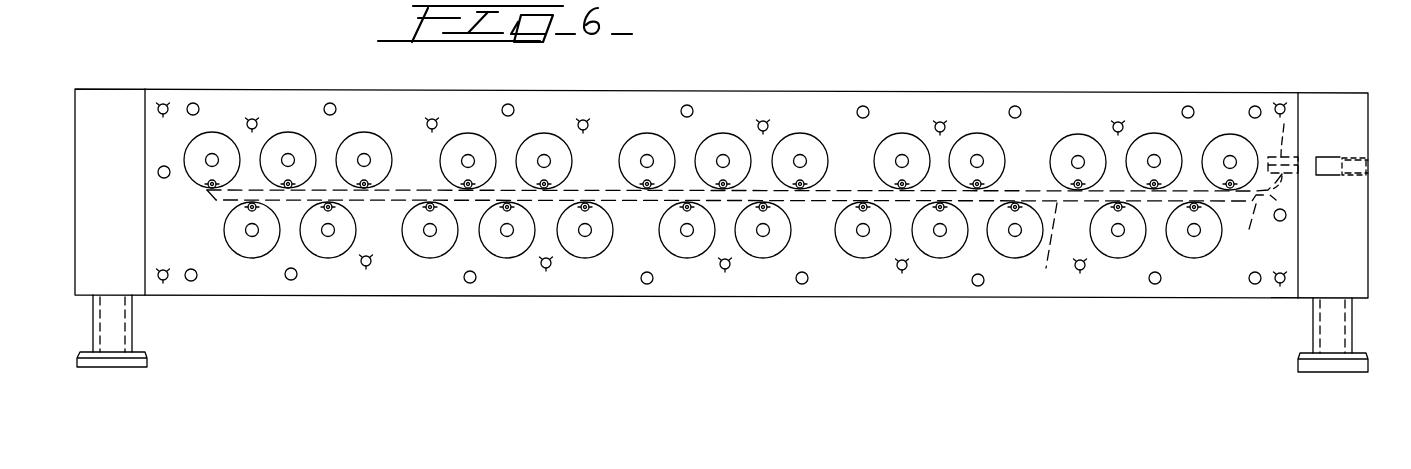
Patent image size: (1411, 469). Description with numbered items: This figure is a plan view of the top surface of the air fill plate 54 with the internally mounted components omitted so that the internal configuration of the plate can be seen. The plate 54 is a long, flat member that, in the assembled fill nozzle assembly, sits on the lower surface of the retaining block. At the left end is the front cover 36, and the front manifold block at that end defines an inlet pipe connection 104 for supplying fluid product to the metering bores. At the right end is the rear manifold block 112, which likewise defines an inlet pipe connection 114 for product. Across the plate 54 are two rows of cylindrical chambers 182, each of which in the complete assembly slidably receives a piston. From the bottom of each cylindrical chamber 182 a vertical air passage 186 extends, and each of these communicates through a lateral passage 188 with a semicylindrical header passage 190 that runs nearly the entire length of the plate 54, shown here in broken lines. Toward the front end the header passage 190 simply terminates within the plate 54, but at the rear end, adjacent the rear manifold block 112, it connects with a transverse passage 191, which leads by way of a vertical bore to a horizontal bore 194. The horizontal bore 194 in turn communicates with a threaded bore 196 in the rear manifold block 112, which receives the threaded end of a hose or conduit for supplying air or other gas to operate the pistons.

The front cover 36 is at (116, 102).
The plate 54 is at (388, 84).
The inlet pipe connection 104 is at (147, 362).
The rear manifold block 112 is at (1318, 100).
The inlet pipe connection 114 is at (1300, 368).
The cylindrical chamber 182 is at (362, 134).
The vertical air passage 186 is at (1082, 195).
The lateral passage 188 is at (1082, 197).
The semicylindrical header passage 190 is at (1163, 253).
The transverse passage 191 is at (1298, 195).
The horizontal bore 194 is at (1285, 118).
The threaded bore 196 is at (1355, 160).